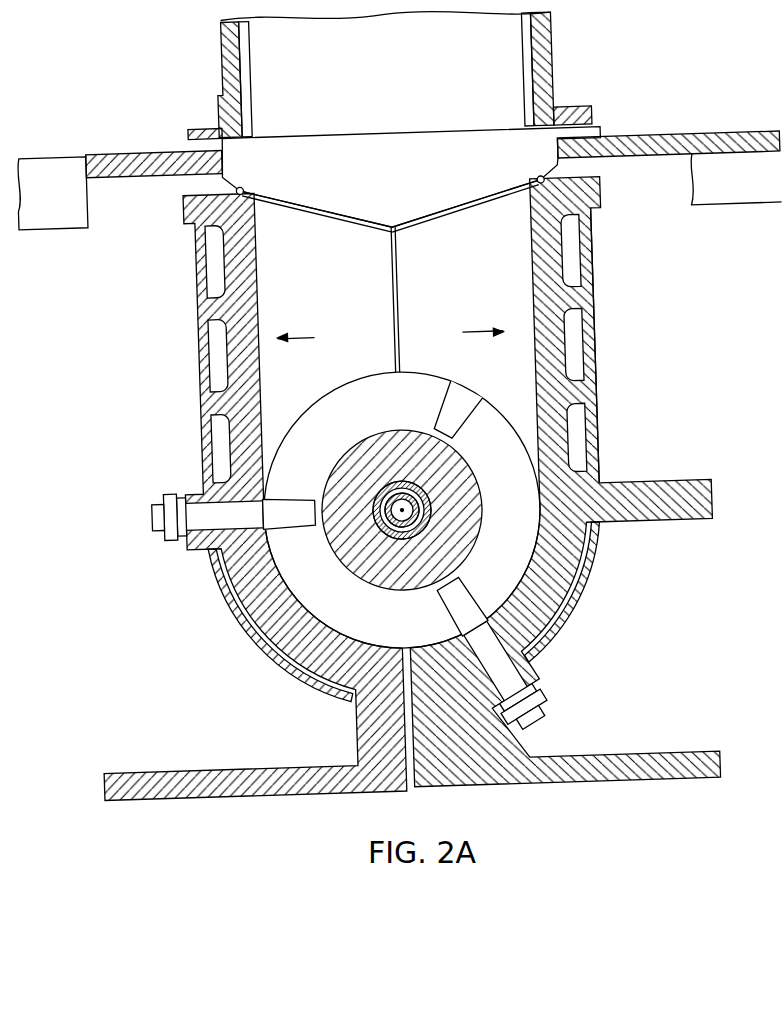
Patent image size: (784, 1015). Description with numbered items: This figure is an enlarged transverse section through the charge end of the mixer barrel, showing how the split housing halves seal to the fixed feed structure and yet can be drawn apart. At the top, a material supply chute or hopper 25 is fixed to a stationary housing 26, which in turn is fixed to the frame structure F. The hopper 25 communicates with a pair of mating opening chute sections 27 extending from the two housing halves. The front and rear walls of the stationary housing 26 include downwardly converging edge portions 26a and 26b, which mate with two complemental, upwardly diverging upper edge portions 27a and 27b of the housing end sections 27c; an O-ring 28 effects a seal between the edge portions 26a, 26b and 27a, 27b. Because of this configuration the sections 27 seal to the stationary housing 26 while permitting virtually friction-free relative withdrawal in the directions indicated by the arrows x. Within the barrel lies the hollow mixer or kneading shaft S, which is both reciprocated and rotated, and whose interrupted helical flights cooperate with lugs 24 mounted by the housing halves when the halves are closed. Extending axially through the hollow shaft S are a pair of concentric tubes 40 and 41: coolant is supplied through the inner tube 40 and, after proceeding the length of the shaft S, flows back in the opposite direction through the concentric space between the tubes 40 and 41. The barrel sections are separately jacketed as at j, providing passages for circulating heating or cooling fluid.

The lug 24 is at (295, 524).
The material supply chute or hopper 25 is at (257, 75).
The stationary housing 26 is at (416, 152).
The downwardly converging edge portion 26a is at (342, 208).
The downwardly converging edge portion 26b is at (475, 207).
The mating opening chute section 27 is at (235, 297).
The upwardly diverging upper edge portion 27a is at (356, 218).
The upwardly diverging upper edge portion 27b is at (464, 217).
The housing end section 27c is at (279, 379).
The O-ring 28 is at (255, 186).
The inner inlet tube 40 is at (422, 505).
The outlet tube 41 is at (425, 517).
The frame structure F is at (139, 143).
The hollow mixer or kneading shaft S is at (453, 480).
The jacket j is at (595, 366).
The direction arrows x is at (390, 335).